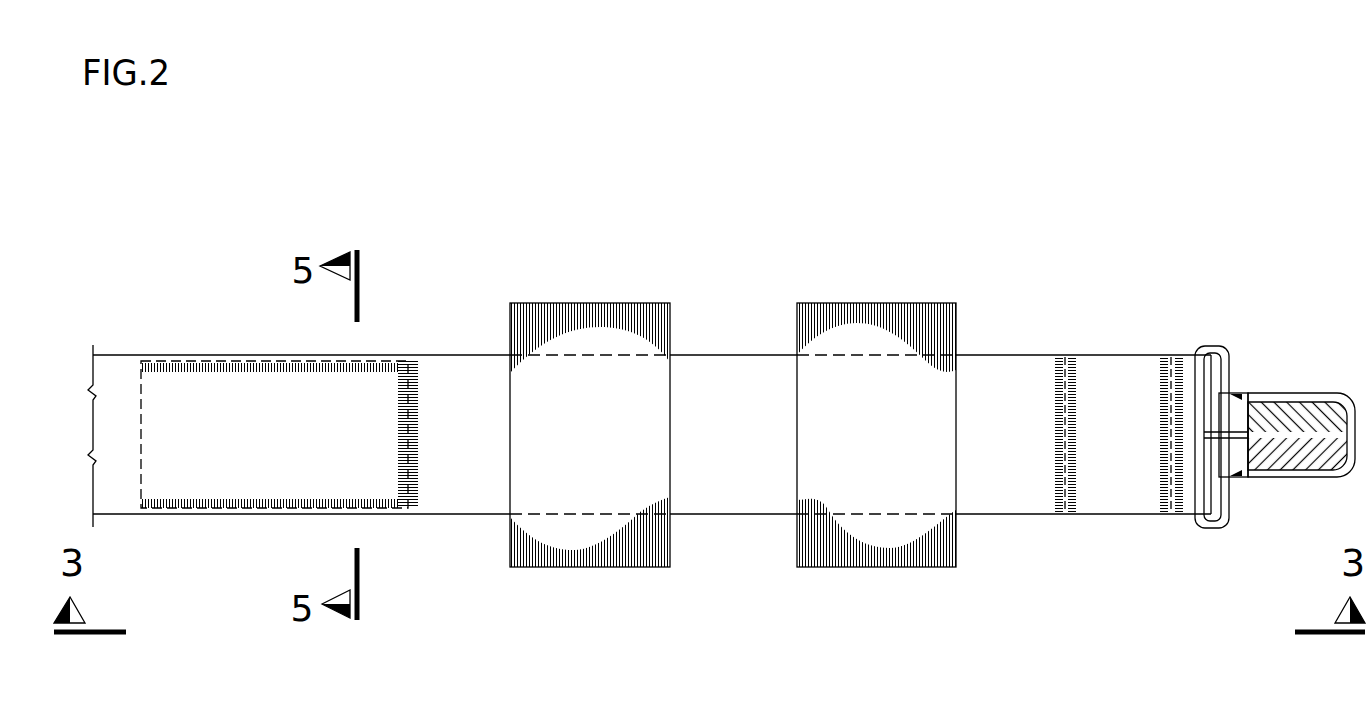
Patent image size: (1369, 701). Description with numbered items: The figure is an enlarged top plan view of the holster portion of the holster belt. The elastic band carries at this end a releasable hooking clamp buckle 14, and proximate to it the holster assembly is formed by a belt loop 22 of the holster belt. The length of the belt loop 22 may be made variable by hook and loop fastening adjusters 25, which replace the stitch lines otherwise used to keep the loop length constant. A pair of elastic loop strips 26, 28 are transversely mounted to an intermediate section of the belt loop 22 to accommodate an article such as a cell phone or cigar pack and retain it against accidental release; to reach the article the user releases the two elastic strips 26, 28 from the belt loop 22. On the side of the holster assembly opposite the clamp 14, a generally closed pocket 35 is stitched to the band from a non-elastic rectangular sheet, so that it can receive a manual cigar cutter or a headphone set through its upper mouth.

The hooking clamp buckle 14 is at (1278, 418).
The belt loop 22 is at (722, 418).
The hook and loop fastening adjusters 25 is at (408, 415).
The elastic loop strip 26 is at (600, 348).
The elastic loop strip 28 is at (877, 347).
The pocket 35 is at (262, 453).